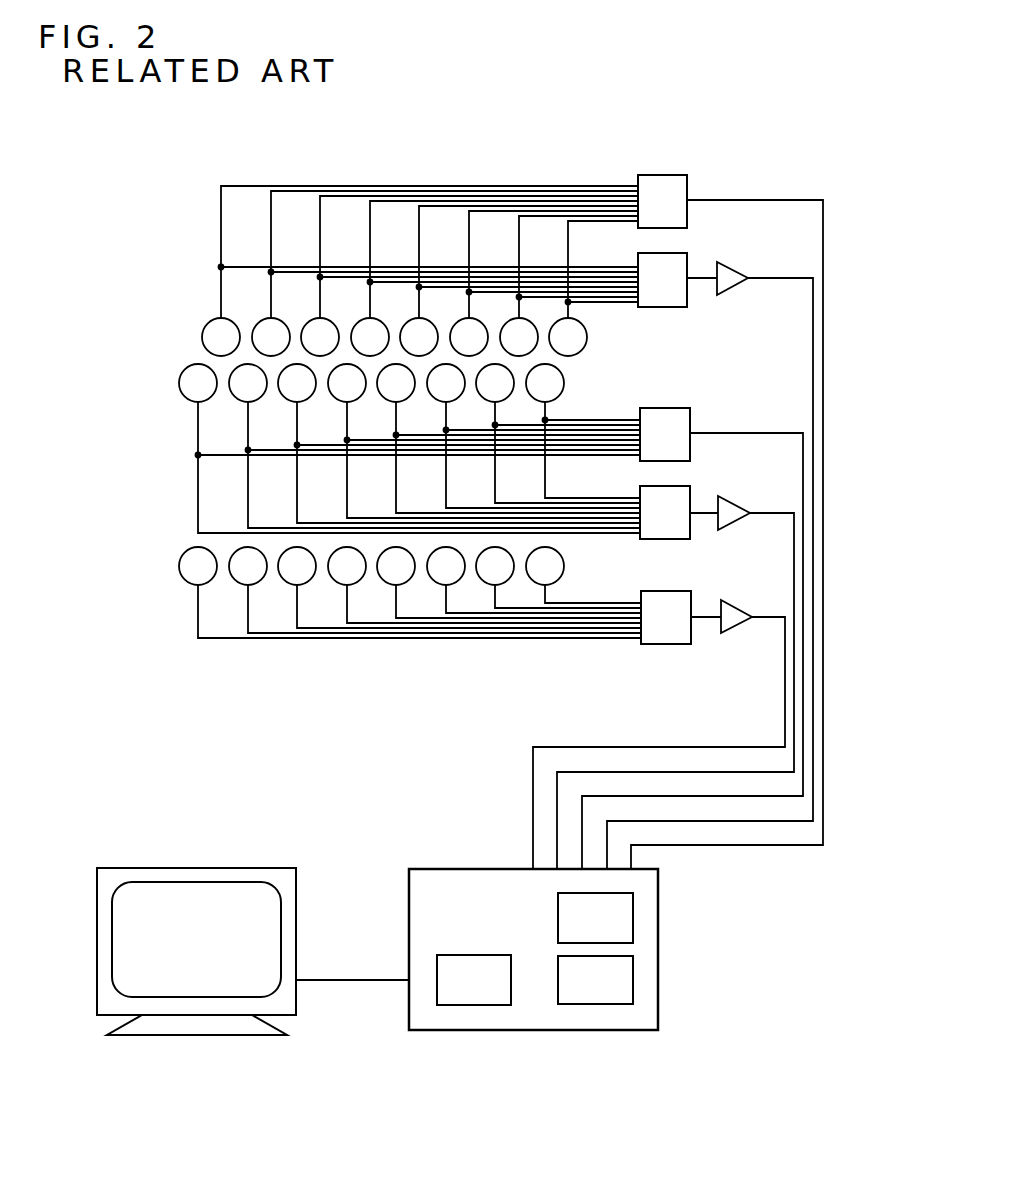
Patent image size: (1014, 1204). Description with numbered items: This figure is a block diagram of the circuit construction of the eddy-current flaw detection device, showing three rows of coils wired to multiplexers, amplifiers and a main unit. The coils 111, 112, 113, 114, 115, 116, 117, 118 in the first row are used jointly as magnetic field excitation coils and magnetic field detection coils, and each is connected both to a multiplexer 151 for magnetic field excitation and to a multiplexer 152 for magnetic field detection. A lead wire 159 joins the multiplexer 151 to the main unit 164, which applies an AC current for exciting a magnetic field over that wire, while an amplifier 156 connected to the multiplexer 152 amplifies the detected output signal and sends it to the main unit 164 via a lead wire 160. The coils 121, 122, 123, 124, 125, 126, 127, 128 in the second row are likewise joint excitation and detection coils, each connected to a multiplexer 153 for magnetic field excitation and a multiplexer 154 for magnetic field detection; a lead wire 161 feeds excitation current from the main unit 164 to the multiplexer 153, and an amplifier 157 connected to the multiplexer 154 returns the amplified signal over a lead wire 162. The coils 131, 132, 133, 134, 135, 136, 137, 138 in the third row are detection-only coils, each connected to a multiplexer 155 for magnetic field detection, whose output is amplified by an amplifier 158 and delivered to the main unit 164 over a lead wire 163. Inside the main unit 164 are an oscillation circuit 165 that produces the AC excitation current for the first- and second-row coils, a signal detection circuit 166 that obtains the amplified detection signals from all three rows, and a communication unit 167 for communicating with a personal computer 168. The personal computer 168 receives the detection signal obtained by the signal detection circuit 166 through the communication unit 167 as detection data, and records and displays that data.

The coil 111 is at (177, 317).
The coil 112 is at (445, 273).
The coil 113 is at (469, 276).
The coil 114 is at (494, 278).
The coil 115 is at (519, 281).
The coil 116 is at (544, 283).
The coil 117 is at (569, 286).
The coil 118 is at (593, 288).
The coil 121 is at (177, 362).
The coil 122 is at (434, 446).
The coil 123 is at (459, 443).
The coil 124 is at (484, 441).
The coil 125 is at (508, 438).
The coil 126 is at (533, 436).
The coil 127 is at (558, 433).
The coil 128 is at (583, 431).
The coil 131 is at (177, 545).
The coil 132 is at (435, 590).
The coil 133 is at (459, 587).
The coil 134 is at (484, 585).
The coil 135 is at (509, 582).
The coil 136 is at (534, 580).
The coil 137 is at (558, 577).
The coil 138 is at (583, 575).
The multiplexer for magnetic field excitation 151 is at (662, 182).
The multiplexer for magnetic field detection 152 is at (663, 298).
The multiplexer for magnetic field excitation 153 is at (667, 413).
The multiplexer for magnetic field detection 154 is at (673, 533).
The multiplexer for magnetic field detection 155 is at (670, 635).
The amplifier 156 is at (733, 267).
The amplifier 157 is at (733, 528).
The amplifier 158 is at (735, 635).
The lead wire 159 is at (737, 200).
The lead wire 160 is at (772, 280).
The lead wire 161 is at (743, 432).
The lead wire 162 is at (767, 512).
The lead wire 163 is at (760, 620).
The main unit of the eddy-current flaw detection device 164 is at (660, 948).
The oscillation circuit 165 is at (618, 915).
The signal detection circuit 166 is at (622, 988).
The communication unit 167 is at (465, 955).
The personal computer 168 is at (297, 907).